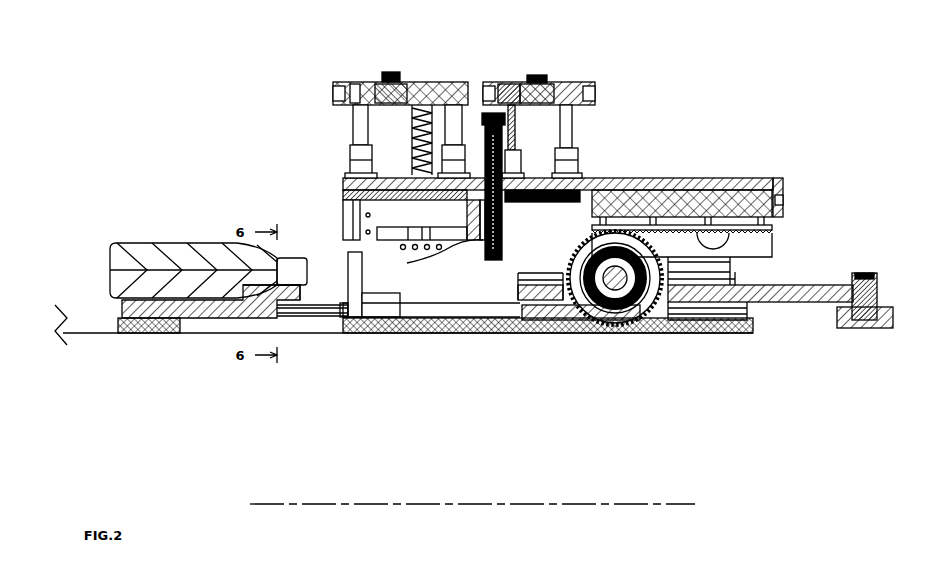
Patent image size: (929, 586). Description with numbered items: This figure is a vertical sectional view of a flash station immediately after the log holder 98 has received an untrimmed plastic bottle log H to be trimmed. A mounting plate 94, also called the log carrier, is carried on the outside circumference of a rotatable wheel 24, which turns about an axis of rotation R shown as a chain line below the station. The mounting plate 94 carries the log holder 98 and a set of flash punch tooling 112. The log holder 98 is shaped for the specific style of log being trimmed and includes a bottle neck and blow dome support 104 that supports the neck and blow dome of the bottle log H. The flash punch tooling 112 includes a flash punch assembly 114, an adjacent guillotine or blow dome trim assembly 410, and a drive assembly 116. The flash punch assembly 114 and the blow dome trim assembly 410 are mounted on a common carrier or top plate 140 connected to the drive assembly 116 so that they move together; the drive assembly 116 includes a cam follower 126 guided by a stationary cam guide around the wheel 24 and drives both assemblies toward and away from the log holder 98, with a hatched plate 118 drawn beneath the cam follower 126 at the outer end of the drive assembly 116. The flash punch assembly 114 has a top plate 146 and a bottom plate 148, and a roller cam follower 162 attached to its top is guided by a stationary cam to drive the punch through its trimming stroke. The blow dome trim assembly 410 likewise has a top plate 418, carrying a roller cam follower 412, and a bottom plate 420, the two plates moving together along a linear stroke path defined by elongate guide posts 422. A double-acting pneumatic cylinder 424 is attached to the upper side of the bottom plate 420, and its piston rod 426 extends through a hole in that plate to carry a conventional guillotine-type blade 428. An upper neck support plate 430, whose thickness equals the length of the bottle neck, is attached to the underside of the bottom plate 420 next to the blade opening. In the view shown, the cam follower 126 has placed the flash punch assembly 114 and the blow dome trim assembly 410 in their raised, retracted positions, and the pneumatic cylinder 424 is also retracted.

The rotatable wheel 24 is at (95, 334).
The plastic bottle log H is at (185, 243).
The log holder 98 is at (287, 322).
The bottle neck and blow dome support 104 is at (303, 288).
The mounting plate 94 is at (586, 334).
The flash punch assembly 114 is at (443, 70).
The top plate 146 is at (352, 82).
The roller cam follower 162 is at (391, 72).
The blow dome trim assembly 410 is at (574, 70).
The roller cam follower 412 is at (537, 75).
The top plate 418 is at (504, 82).
The piston rod 426 is at (516, 140).
The elongate guide posts 422 is at (573, 126).
The double-acting pneumatic cylinder 424 is at (482, 135).
The bottom plate 148 is at (420, 201).
The guillotine-type blade 428 is at (503, 227).
The upper neck support plate 430 is at (429, 256).
The bottom plate 420 is at (550, 202).
The top plate 140 is at (657, 177).
The flash punch tooling 112 is at (704, 168).
The drive assembly 116 is at (805, 275).
The cam follower 126 is at (878, 292).
The mounting plate 118 is at (856, 329).
The axis of rotation R is at (472, 504).